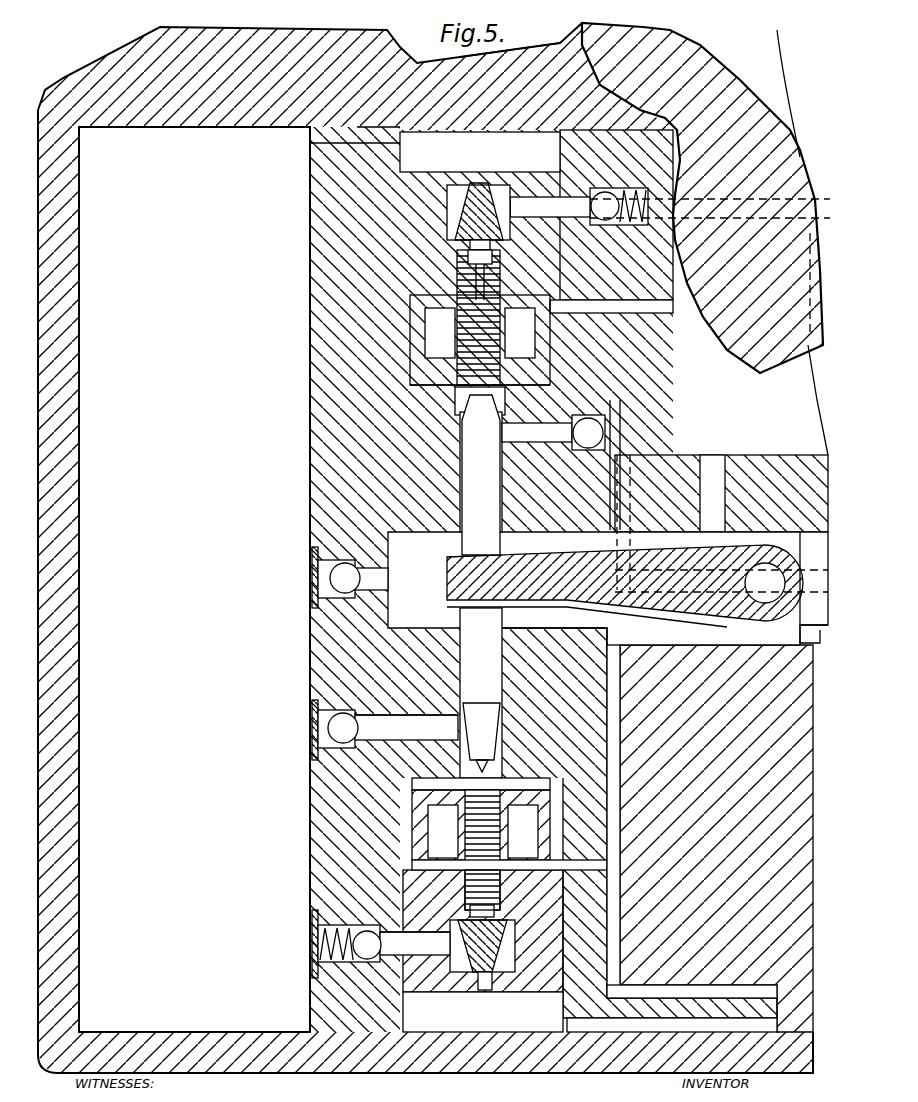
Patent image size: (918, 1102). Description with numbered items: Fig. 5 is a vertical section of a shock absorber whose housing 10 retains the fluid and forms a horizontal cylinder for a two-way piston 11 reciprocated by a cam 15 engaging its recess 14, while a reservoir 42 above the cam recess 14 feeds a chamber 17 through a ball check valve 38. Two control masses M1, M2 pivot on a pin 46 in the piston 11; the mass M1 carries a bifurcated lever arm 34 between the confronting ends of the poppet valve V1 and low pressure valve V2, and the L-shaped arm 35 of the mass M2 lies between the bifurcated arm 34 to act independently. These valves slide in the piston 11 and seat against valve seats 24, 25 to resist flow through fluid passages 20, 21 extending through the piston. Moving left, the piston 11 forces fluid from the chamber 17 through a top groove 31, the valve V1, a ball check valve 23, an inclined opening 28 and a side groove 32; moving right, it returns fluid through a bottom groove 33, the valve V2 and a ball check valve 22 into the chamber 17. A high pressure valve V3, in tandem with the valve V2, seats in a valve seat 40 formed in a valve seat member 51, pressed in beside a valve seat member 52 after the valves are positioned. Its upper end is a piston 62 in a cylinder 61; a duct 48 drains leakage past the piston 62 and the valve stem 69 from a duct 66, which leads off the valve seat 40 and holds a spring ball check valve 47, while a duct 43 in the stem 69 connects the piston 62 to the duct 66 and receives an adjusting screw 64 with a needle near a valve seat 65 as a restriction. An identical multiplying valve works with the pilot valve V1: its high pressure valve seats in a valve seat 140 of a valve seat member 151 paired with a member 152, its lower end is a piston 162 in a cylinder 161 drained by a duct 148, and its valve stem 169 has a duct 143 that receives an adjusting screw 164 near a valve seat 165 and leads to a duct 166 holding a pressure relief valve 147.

The housing 10 is at (118, 68).
The two-way piston 11 is at (318, 488).
The recess 14 is at (760, 457).
The cam 15 is at (792, 288).
The chamber 17 is at (152, 562).
The fluid passage 20 is at (312, 138).
The fluid passage 21 is at (350, 705).
The ball check valve 22 is at (330, 735).
The ball check valve 23 is at (590, 418).
The valve seat 24 is at (466, 420).
The valve seat 25 is at (470, 765).
The inclined opening 28 is at (622, 452).
The groove 31 is at (358, 127).
The groove 32 is at (680, 614).
The groove 33 is at (488, 183).
The bifurcated lever arm 34 is at (447, 557).
The L-shaped arm 35 is at (455, 582).
The ball check valve 38 is at (337, 582).
The valve seat 40 is at (455, 988).
The reservoir 42 is at (534, 89).
The duct 43 is at (470, 892).
The pin 46 is at (765, 603).
The spring ball check valve 47 is at (333, 962).
The duct 48 is at (593, 864).
The valve seat member 51 is at (555, 985).
The valve seat member 52 is at (500, 715).
The cylinder 61 is at (425, 784).
The piston 62 is at (425, 824).
The adjusting screw 64 is at (500, 850).
The valve seat 65 is at (520, 912).
The duct 66 is at (395, 950).
The valve stem 69 is at (500, 882).
The valve seat 140 is at (520, 192).
The duct 143 is at (494, 235).
The pressure relief valve 147 is at (648, 188).
The duct 148 is at (613, 300).
The valve seat member 151 is at (670, 197).
The valve seat member 152 is at (506, 398).
The cylinder 161 is at (425, 362).
The piston 162 is at (440, 332).
The adjusting screw 164 is at (500, 290).
The valve seat 165 is at (500, 252).
The duct 166 is at (512, 198).
The valve stem 169 is at (500, 268).
The poppet valve V1 is at (481, 472).
The low pressure valve V2 is at (481, 693).
The high pressure valve V3 is at (483, 1002).
The control mass M1 is at (814, 587).
The control mass M2 is at (716, 838).